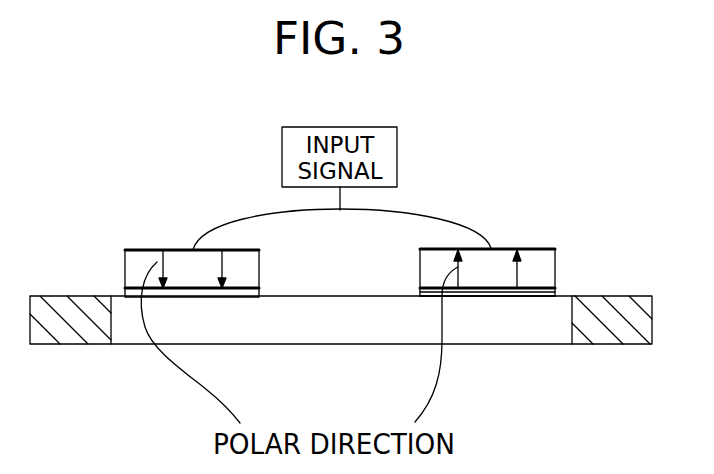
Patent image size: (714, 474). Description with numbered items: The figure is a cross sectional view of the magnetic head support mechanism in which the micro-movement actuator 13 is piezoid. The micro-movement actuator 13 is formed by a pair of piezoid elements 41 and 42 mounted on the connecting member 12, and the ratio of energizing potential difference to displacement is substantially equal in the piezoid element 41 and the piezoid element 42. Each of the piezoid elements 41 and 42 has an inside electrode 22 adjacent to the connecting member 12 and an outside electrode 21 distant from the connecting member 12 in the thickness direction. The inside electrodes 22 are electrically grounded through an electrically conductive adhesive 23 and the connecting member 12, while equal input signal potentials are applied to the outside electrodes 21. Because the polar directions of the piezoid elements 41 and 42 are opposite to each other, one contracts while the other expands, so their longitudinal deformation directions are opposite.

The connecting member 12 is at (340, 331).
The micro-movement actuator 13 is at (203, 218).
The piezoid element 42 is at (123, 268).
The piezoid element 41 is at (560, 253).
The outside electrode 21 is at (493, 248).
The inside electrode 22 is at (537, 282).
The electrically conductive adhesive 23 is at (517, 297).